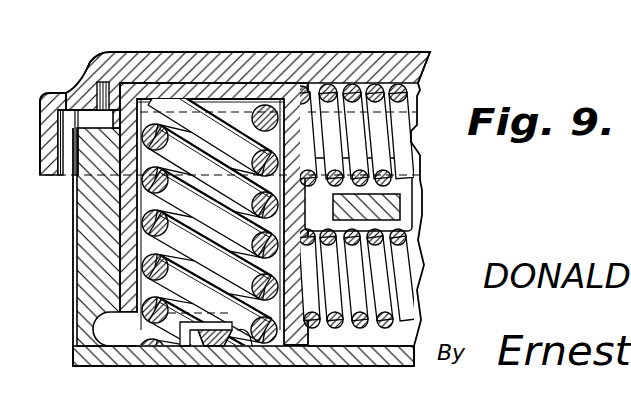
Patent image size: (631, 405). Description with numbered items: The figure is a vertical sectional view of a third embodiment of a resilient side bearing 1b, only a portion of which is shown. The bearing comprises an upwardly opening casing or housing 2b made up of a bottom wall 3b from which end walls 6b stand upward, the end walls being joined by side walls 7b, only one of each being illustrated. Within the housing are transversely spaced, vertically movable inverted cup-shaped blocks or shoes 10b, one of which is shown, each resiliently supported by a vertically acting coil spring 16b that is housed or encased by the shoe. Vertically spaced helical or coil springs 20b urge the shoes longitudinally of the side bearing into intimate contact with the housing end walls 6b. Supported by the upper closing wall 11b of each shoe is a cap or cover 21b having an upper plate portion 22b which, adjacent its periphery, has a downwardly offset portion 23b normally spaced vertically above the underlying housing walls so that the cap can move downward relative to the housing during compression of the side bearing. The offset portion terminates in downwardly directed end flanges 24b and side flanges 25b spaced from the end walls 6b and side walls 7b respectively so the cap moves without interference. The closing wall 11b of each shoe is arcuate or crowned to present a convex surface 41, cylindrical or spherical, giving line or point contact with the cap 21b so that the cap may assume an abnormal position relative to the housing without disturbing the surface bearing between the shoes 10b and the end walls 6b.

The side bearing 1b is at (73, 306).
The casing or housing 2b is at (95, 355).
The bottom wall 3b is at (256, 350).
The end walls 6b is at (85, 255).
The side walls 7b is at (325, 340).
The inverted cup-shaped blocks or shoes 10b is at (126, 302).
The upper closing wall 11b is at (208, 101).
The coil spring 16b is at (198, 214).
The helical or coil springs 20b is at (400, 158).
The cap or cover 21b is at (175, 58).
The upper plate portion 22b is at (237, 57).
The downwardly offset portion 23b is at (65, 100).
The end flanges 24b is at (42, 158).
The side flanges 25b is at (70, 178).
The convex surface 41 is at (133, 84).